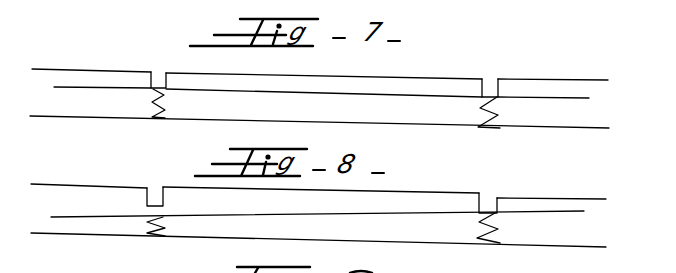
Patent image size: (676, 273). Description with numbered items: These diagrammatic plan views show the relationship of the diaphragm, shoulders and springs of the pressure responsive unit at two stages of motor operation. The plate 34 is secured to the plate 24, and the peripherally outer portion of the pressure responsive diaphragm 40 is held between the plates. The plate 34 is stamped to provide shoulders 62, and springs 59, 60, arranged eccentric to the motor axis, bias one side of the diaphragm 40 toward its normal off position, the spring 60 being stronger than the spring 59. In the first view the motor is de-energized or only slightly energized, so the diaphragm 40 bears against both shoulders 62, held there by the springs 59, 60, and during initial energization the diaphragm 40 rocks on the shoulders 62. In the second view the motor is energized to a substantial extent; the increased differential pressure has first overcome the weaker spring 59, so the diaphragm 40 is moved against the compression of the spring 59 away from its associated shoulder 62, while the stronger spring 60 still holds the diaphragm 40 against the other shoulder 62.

In FIG. 7, the plate 24 is at (541, 128).
In FIG. 8, the plate 24 is at (478, 247).
In FIG. 7, the plate 34 is at (575, 79).
In FIG. 8, the plate 34 is at (580, 197).
In FIG. 7, the pressure responsive diaphragm 40 is at (548, 100).
In FIG. 8, the pressure responsive diaphragm 40 is at (540, 213).
In FIG. 7, the spring 59 is at (164, 103).
In FIG. 8, the spring 59 is at (169, 226).
In FIG. 7, the spring 60 is at (480, 109).
In FIG. 8, the spring 60 is at (478, 222).
In FIG. 7, the shoulder 62 is at (158, 87).
In FIG. 8, the shoulder 62 is at (146, 198).